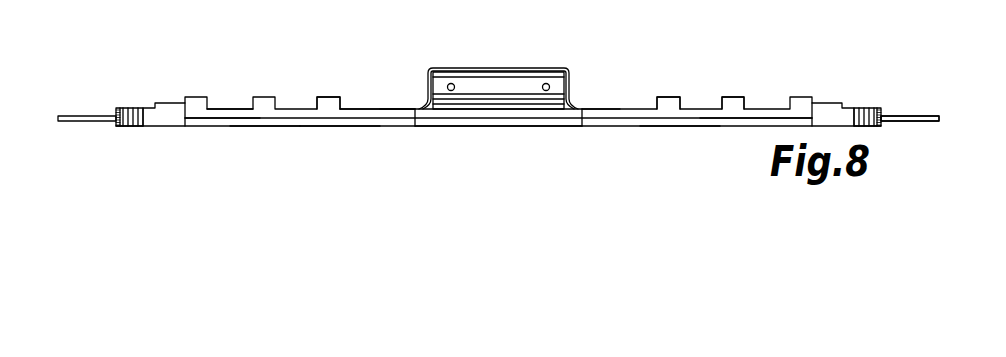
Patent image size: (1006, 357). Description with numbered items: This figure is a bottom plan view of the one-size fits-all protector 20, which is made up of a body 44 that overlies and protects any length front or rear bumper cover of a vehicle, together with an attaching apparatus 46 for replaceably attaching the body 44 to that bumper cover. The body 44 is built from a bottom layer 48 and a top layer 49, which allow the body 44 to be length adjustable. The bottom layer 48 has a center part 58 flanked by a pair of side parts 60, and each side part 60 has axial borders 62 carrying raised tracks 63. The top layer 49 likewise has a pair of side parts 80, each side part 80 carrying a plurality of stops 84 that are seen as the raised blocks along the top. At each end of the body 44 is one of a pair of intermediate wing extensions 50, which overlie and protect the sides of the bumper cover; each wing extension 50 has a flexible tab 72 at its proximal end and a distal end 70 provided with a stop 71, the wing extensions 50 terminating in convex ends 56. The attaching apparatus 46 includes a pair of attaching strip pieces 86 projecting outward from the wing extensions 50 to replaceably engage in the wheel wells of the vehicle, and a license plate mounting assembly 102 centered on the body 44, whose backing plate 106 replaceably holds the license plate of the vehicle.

The one-size fits-all protector 20 is at (156, 88).
The pair of attaching strip pieces 86 is at (100, 115).
The pair of intermediate wing extensions 50 is at (133, 108).
The top layer 49 is at (223, 108).
The flexible tab 72 is at (313, 108).
The body 44 is at (367, 108).
The pair of side parts of top layer 80 is at (395, 109).
The plurality of stops 84 is at (733, 97).
The attaching apparatus 46 is at (912, 116).
The license plate mounting assembly 102 is at (498, 68).
The backing plate 106 is at (497, 68).
The convex ends 56 is at (520, 148).
The distal end 70 is at (520, 148).
The stop 71 is at (117, 124).
The axial borders 62 is at (498, 145).
The raised tracks 63 is at (210, 128).
The bottom layer 48 is at (259, 127).
The pair of side parts of bottom layer 60 is at (325, 128).
The center part of bottom layer 58 is at (497, 127).